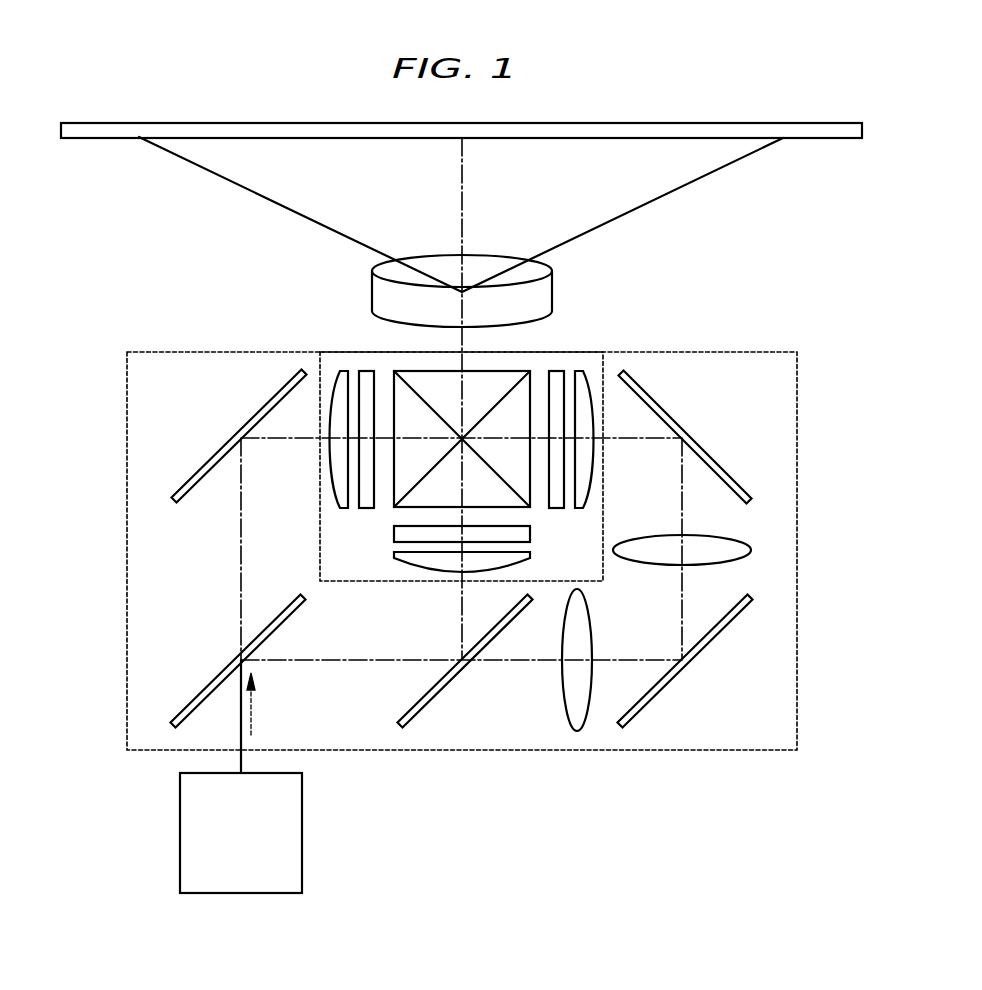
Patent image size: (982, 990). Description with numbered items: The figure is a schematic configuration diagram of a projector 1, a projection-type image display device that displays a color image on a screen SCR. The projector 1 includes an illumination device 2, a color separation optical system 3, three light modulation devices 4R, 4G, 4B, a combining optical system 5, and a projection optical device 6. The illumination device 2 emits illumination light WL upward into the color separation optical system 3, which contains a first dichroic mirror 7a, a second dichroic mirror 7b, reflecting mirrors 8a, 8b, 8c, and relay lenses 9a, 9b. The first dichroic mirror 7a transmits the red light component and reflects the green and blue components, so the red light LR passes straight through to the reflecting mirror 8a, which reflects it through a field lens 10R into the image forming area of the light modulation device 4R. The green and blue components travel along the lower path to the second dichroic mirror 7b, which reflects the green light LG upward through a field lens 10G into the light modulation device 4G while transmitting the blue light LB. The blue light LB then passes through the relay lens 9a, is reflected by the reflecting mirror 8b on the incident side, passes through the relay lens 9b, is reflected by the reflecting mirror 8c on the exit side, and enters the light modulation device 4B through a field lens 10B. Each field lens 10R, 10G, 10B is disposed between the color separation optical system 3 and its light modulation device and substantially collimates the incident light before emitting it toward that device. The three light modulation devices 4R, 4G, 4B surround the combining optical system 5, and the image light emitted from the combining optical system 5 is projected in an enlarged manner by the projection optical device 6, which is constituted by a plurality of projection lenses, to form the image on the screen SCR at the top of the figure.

The projector 1 is at (800, 330).
The illumination device 2 is at (303, 829).
The color separation optical system 3 is at (127, 493).
The light modulation device 4R is at (367, 370).
The light modulation device 4G is at (398, 535).
The light modulation device 4B is at (557, 370).
The combining optical system 5 is at (485, 378).
The projection optical device 6 is at (442, 267).
The first dichroic mirror 7a is at (203, 690).
The second dichroic mirror 7b is at (440, 693).
The reflecting mirror 8a is at (217, 453).
The reflecting mirror 8b is at (710, 647).
The reflecting mirror 8c is at (712, 455).
The relay lens 9a is at (562, 682).
The relay lens 9b is at (740, 540).
The field lens 10R is at (343, 370).
The field lens 10G is at (400, 558).
The field lens 10B is at (577, 370).
The screen SCR is at (828, 138).
The illumination light WL is at (252, 712).
The red light LR is at (241, 570).
The green light LG is at (462, 617).
The blue light LB is at (682, 607).